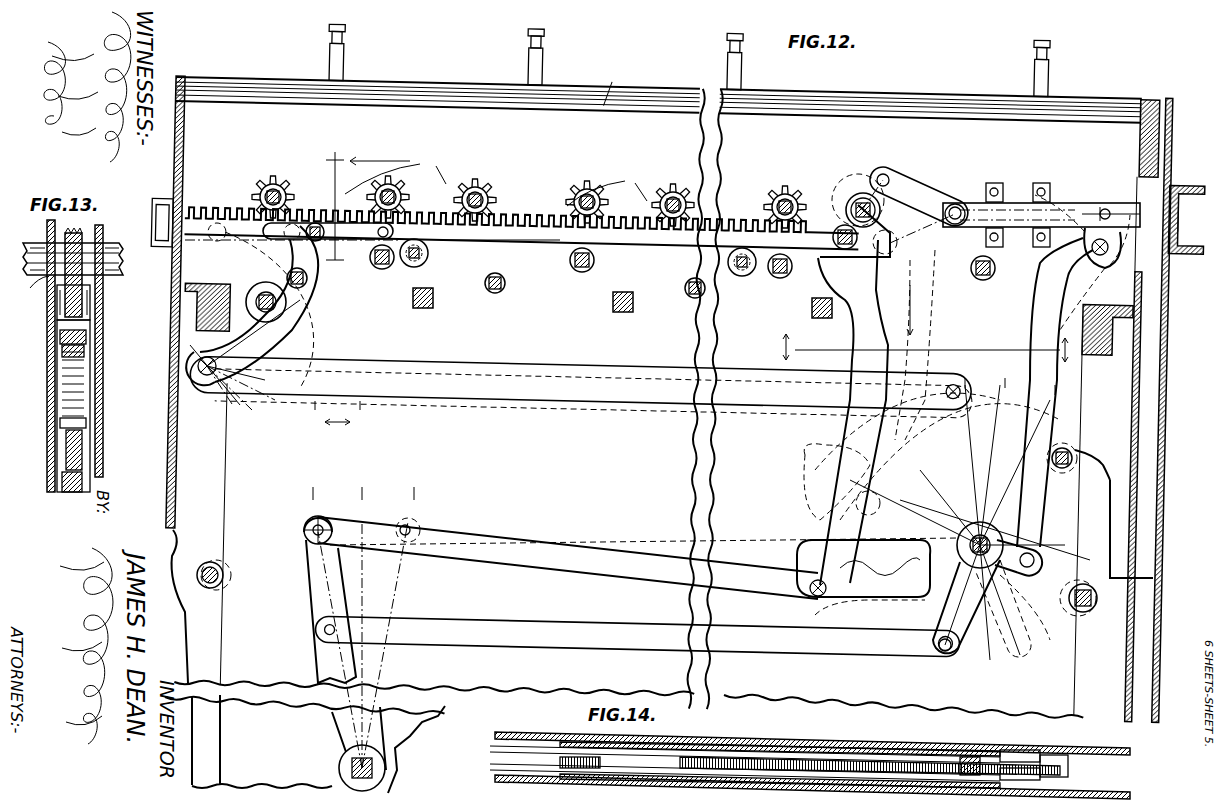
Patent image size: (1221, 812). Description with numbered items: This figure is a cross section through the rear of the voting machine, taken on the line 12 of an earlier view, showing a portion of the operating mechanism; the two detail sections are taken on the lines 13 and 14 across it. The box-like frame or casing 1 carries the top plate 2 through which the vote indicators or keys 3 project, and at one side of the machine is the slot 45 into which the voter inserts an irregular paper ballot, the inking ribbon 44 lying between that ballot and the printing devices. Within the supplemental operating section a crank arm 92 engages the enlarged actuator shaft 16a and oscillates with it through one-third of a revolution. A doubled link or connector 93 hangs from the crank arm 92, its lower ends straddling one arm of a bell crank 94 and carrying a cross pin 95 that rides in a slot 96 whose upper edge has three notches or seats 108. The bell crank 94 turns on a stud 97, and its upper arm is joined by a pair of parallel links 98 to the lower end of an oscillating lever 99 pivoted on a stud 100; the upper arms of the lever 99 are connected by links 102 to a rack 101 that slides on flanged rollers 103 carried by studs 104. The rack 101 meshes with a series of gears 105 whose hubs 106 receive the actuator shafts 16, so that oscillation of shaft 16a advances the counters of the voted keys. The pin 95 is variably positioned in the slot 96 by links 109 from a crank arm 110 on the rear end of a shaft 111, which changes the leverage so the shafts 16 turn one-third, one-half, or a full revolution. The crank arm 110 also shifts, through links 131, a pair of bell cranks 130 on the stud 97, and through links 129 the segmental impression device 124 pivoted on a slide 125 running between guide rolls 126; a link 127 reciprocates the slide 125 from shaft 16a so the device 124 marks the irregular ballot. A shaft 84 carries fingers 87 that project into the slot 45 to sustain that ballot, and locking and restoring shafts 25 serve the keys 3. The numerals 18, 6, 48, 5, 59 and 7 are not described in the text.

In FIG. 12, the top plate 2 is at (452, 76).
In FIG. 12, the cover plate 18 is at (612, 86).
In FIG. 12, the vote indicators or keys 3 is at (343, 48).
In FIG. 12, the cross bar 6 is at (424, 316).
In FIG. 12, the slot 45 is at (1152, 78).
In FIG. 12, the inking ribbon 44 is at (1176, 165).
In FIG. 12, the gears 105 is at (274, 184).
In FIG. 13, the gears 105 is at (78, 244).
In FIG. 12, the hubs 106 is at (496, 179).
In FIG. 13, the hubs 106 is at (32, 290).
In FIG. 12, the actuator shafts 16 is at (280, 180).
In FIG. 13, the actuator shafts 16 is at (108, 270).
In FIG. 12, the actuator shaft 16a is at (865, 190).
In FIG. 12, the section line 13— 13 is at (366, 296).
In FIG. 12, the section line 14— 14 is at (912, 348).
In FIG. 12, the link 127 is at (920, 180).
In FIG. 12, the guide rolls 126 is at (1018, 182).
In FIG. 12, the slide 125 is at (1012, 202).
In FIG. 12, the segmental pointer or impression device 124 is at (1072, 202).
In FIG. 12, the section line 12 is at (1086, 262).
In FIG. 12, the links 102 is at (352, 248).
In FIG. 13, the links 102 is at (86, 334).
In FIG. 12, the locking and restoring shafts 25 is at (378, 271).
In FIG. 12, the flanged rollers 103 is at (426, 254).
In FIG. 12, the rack 101 is at (538, 244).
In FIG. 13, the rack 101 is at (90, 292).
In FIG. 12, the studs 104 is at (410, 268).
In FIG. 12, the rod 48 is at (502, 294).
In FIG. 12, the block 5 is at (191, 296).
In FIG. 12, the stud 100 is at (290, 300).
In FIG. 13, the stud 100 is at (88, 394).
In FIG. 12, the oscillating lever 99 is at (275, 326).
In FIG. 13, the oscillating lever 99 is at (86, 425).
In FIG. 12, the parallel links 98 is at (580, 376).
In FIG. 13, the parallel links 98 is at (84, 447).
In FIG. 14, the parallel links 98 is at (772, 752).
In FIG. 12, the crank arm 92 is at (892, 243).
In FIG. 12, the links 129 is at (1038, 329).
In FIG. 14, the links 129 is at (1068, 778).
In FIG. 12, the link or connector 93 is at (850, 426).
In FIG. 14, the link or connector 93 is at (710, 742).
In FIG. 12, the bell crank 94 is at (924, 439).
In FIG. 14, the bell crank 94 is at (741, 775).
In FIG. 12, the notches or seats 108 is at (843, 482).
In FIG. 12, the stud 97 is at (965, 540).
In FIG. 14, the stud 97 is at (937, 782).
In FIG. 12, the shaft 84 is at (1075, 452).
In FIG. 12, the fingers 87 is at (1110, 545).
In FIG. 12, the bell cranks 130 is at (1000, 590).
In FIG. 14, the bell cranks 130 is at (985, 760).
In FIG. 12, the shaft 59 is at (1063, 687).
In FIG. 13, the shaft 59 is at (90, 352).
In FIG. 14, the shaft 59 is at (808, 752).
In FIG. 12, the cross pin 95 is at (808, 578).
In FIG. 14, the cross pin 95 is at (616, 778).
In FIG. 12, the slot 96 is at (896, 608).
In FIG. 12, the links 131 is at (797, 640).
In FIG. 12, the links 109 is at (574, 550).
In FIG. 14, the links 109 is at (490, 768).
In FIG. 12, the crank arm 110 is at (308, 582).
In FIG. 12, the shaft 111 is at (334, 770).
In FIG. 12, the frame or casing 1 is at (631, 428).
In FIG. 12, the frame plate 7 is at (188, 502).